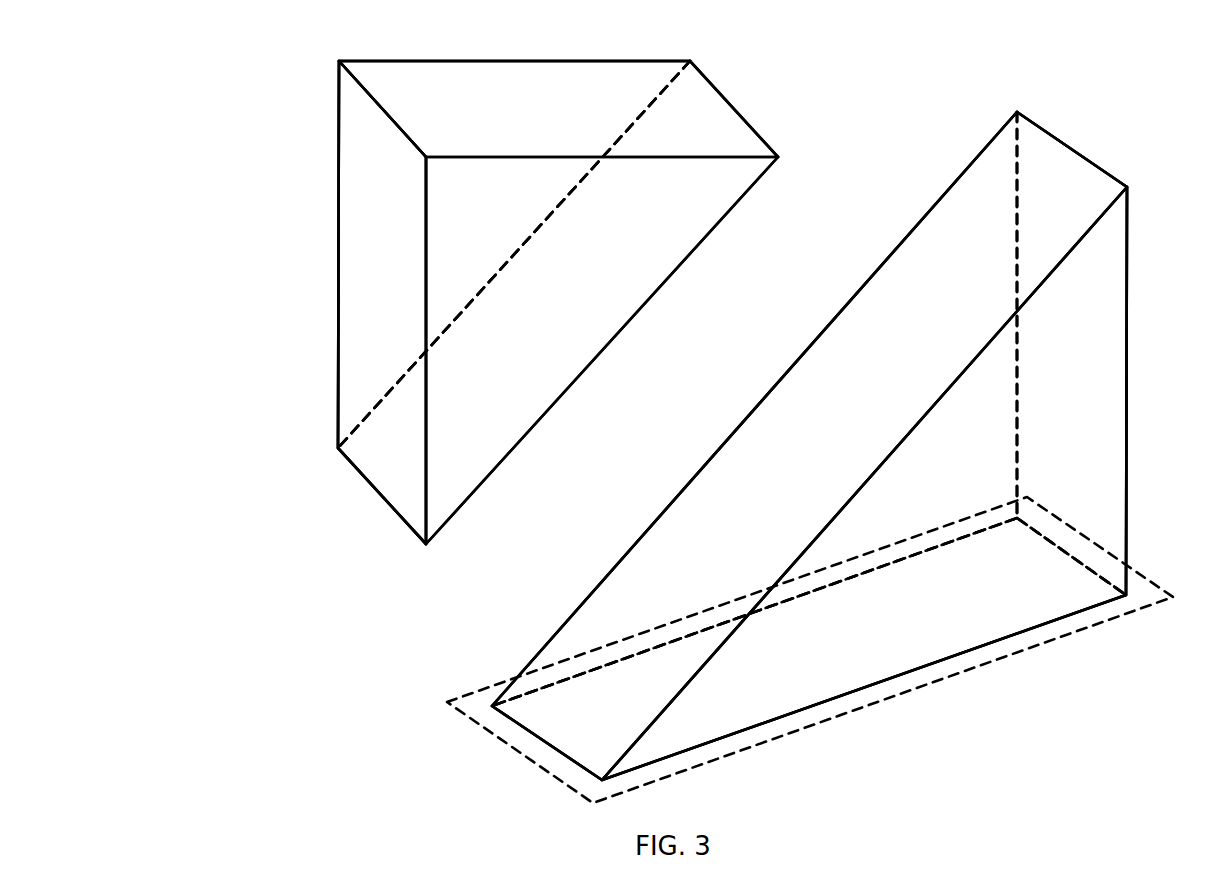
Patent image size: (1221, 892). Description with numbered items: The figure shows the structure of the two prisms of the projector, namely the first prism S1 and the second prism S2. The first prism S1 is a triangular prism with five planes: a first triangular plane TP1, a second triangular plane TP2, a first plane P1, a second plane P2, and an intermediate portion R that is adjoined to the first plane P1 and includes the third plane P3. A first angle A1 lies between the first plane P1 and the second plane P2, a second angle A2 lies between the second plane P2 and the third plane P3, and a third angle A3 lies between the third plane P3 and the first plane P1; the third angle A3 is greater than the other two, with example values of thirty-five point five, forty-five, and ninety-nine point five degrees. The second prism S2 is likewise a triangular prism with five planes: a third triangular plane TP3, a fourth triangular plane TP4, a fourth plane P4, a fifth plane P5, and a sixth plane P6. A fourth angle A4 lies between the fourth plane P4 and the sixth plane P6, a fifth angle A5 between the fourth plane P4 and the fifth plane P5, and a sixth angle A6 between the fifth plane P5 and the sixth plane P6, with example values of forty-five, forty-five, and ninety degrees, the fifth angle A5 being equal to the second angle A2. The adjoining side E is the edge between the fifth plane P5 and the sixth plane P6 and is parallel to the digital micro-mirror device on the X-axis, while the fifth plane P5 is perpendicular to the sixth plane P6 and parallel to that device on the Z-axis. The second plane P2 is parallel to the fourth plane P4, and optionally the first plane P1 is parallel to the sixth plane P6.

The first prism S1 is at (1008, 494).
The second prism S2 is at (562, 129).
The first plane P1 is at (1080, 402).
The second plane P2 is at (943, 272).
The third plane P3 is at (870, 630).
The first triangular plane TP1 is at (960, 607).
The second triangular plane TP2 is at (849, 382).
The first angle A1 is at (1126, 305).
The second angle A2 is at (693, 678).
The third angle A3 is at (1125, 530).
The fourth plane P4 is at (402, 456).
The fifth plane P5 is at (695, 117).
The sixth plane P6 is at (360, 375).
The third triangular plane TP3 is at (548, 312).
The fourth triangular plane TP4 is at (390, 267).
The fourth angle A4 is at (484, 477).
The fifth angle A5 is at (670, 160).
The sixth angle A6 is at (485, 160).
The adjoining side E is at (383, 110).
The intermediate portion R is at (520, 752).